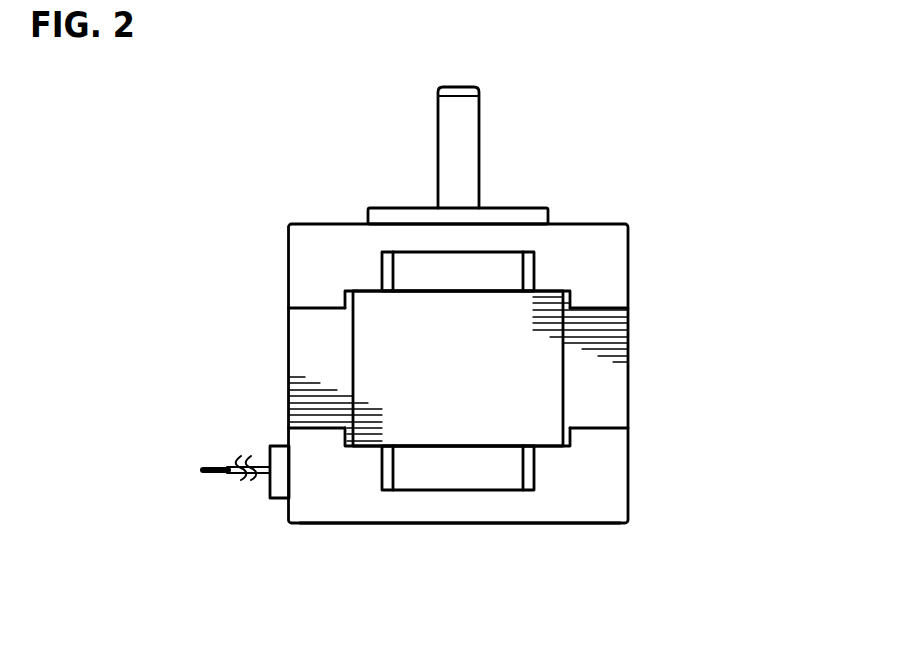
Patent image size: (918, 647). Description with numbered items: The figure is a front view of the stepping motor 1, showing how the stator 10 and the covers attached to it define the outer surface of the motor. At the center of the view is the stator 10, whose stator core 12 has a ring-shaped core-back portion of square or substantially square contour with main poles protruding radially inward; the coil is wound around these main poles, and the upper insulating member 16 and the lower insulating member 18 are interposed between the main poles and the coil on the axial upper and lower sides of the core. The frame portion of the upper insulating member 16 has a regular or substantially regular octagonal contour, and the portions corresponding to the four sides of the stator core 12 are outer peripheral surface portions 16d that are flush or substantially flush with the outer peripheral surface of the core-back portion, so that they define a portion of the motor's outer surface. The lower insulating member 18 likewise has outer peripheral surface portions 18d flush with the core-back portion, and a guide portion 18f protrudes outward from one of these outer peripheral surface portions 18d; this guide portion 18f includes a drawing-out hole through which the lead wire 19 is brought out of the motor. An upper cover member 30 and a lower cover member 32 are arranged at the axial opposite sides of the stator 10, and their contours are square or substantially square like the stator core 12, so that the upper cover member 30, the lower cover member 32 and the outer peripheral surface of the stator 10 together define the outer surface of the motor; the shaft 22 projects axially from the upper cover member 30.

The motor 1 is at (735, 101).
The stator 10 is at (640, 360).
The stator core 12 is at (297, 328).
The upper insulating member 16 is at (417, 252).
The outer peripheral surface portion 16d is at (488, 270).
The lower insulating member 18 is at (492, 491).
The outer peripheral surface portion 18d is at (428, 478).
The guide portion 18f is at (268, 487).
The lead wire 19 is at (236, 463).
The shaft 22 is at (470, 147).
The upper cover member 30 is at (315, 230).
The lower cover member 32 is at (613, 484).